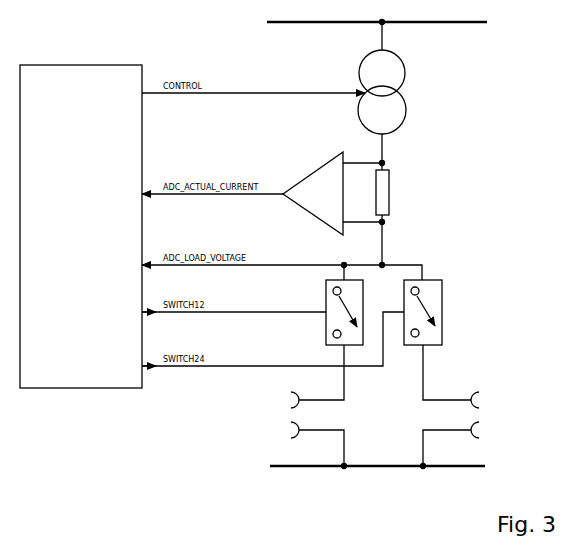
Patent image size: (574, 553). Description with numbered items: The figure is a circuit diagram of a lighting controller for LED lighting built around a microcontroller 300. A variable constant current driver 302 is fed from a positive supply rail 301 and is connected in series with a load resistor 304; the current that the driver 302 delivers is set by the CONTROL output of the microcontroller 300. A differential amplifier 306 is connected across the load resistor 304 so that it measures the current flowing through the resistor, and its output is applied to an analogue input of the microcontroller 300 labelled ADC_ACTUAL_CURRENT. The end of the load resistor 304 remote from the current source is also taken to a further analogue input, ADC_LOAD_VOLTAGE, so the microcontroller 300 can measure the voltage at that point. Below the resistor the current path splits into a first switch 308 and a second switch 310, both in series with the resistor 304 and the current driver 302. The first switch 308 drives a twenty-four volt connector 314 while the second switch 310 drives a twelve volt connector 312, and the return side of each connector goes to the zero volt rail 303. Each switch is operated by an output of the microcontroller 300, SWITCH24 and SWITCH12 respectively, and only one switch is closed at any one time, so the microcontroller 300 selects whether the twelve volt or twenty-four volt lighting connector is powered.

The microcontroller 300 is at (63, 276).
The positive supply rail (+V) 301 is at (333, 22).
The variable constant current driver 302 is at (402, 120).
The ground rail (0V) 303 is at (372, 466).
The load resistor 304 is at (390, 205).
The differential amplifier 306 is at (303, 181).
The first switch 308 is at (443, 321).
The second switch 310 is at (326, 318).
The 12v connector 312 is at (298, 432).
The 24v connector 314 is at (476, 392).